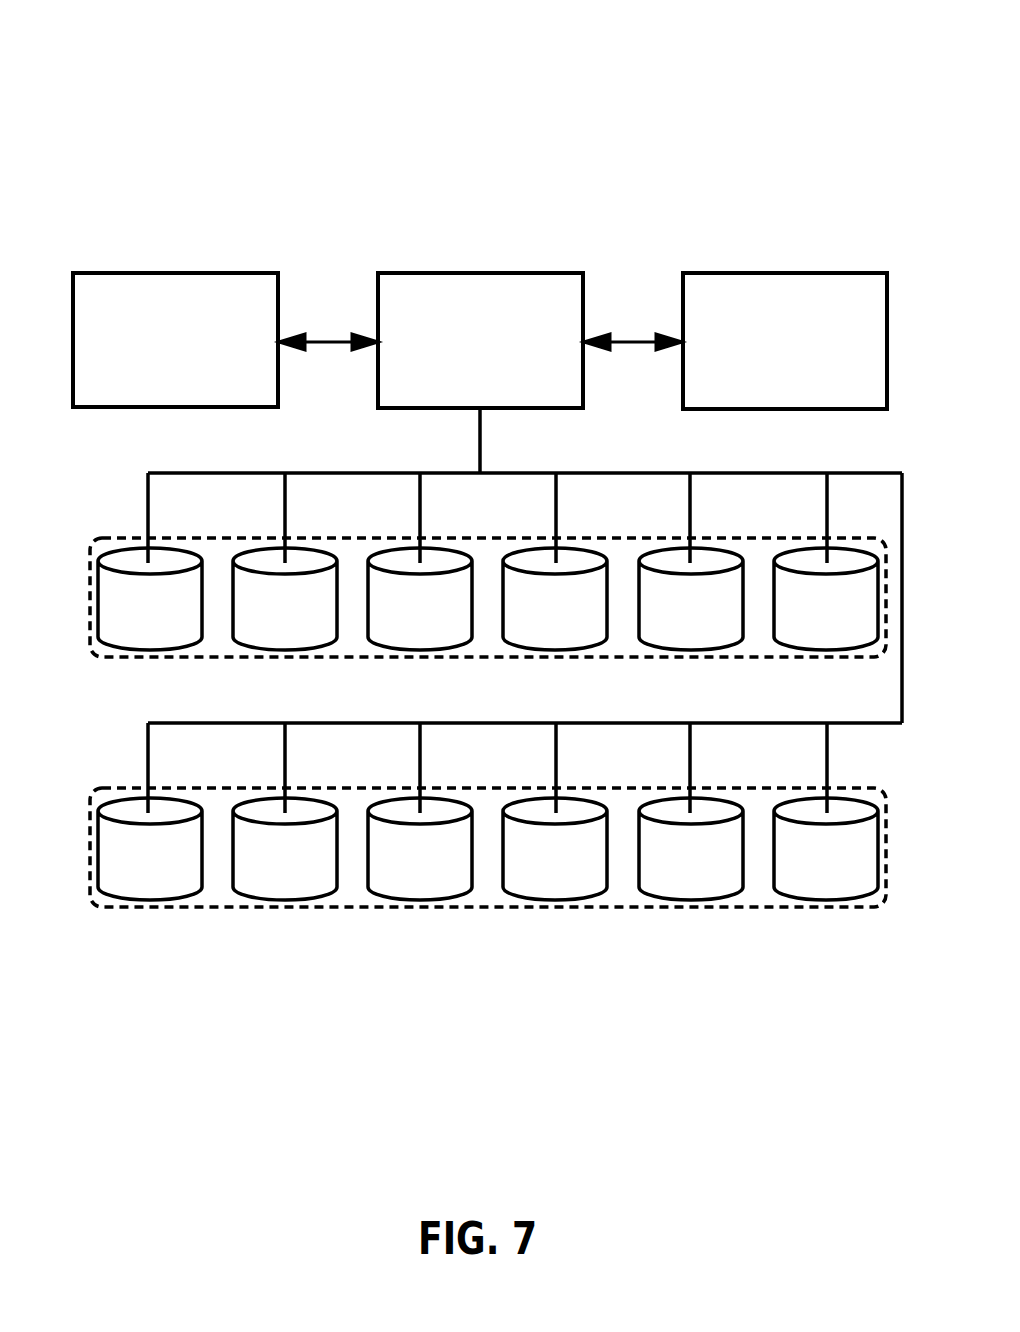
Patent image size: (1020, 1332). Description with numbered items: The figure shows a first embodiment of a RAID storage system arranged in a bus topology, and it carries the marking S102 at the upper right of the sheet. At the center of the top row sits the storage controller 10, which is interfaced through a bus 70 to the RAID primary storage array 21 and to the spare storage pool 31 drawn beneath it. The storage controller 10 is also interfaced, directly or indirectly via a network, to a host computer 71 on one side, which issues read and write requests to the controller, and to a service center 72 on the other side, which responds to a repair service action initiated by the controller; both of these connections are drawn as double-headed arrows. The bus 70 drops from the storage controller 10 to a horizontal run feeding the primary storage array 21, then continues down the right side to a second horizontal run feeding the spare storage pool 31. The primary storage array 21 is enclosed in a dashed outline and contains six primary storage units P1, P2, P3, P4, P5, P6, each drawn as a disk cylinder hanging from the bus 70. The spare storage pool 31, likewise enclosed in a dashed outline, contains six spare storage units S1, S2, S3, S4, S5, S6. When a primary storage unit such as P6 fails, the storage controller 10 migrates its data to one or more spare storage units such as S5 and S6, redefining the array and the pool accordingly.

The step S102 (FIG. 7 configuration) S102 is at (851, 74).
The host computer 71 is at (188, 379).
The storage controller 10 is at (491, 366).
The service center 72 is at (798, 378).
The bus 70 is at (598, 471).
The RAID primary storage array 21 is at (90, 596).
The spare storage pool 31 is at (90, 846).
The primary storage unit P1 is at (164, 616).
The primary storage unit P2 is at (299, 616).
The primary storage unit P3 is at (434, 616).
The primary storage unit P4 is at (569, 616).
The primary storage unit P5 is at (705, 616).
The primary storage unit P6 is at (840, 616).
The spare storage unit S1 is at (164, 866).
The spare storage unit S2 is at (299, 866).
The spare storage unit S3 is at (434, 866).
The spare storage unit S4 is at (569, 866).
The spare storage unit S5 is at (705, 866).
The spare storage unit S6 is at (840, 866).